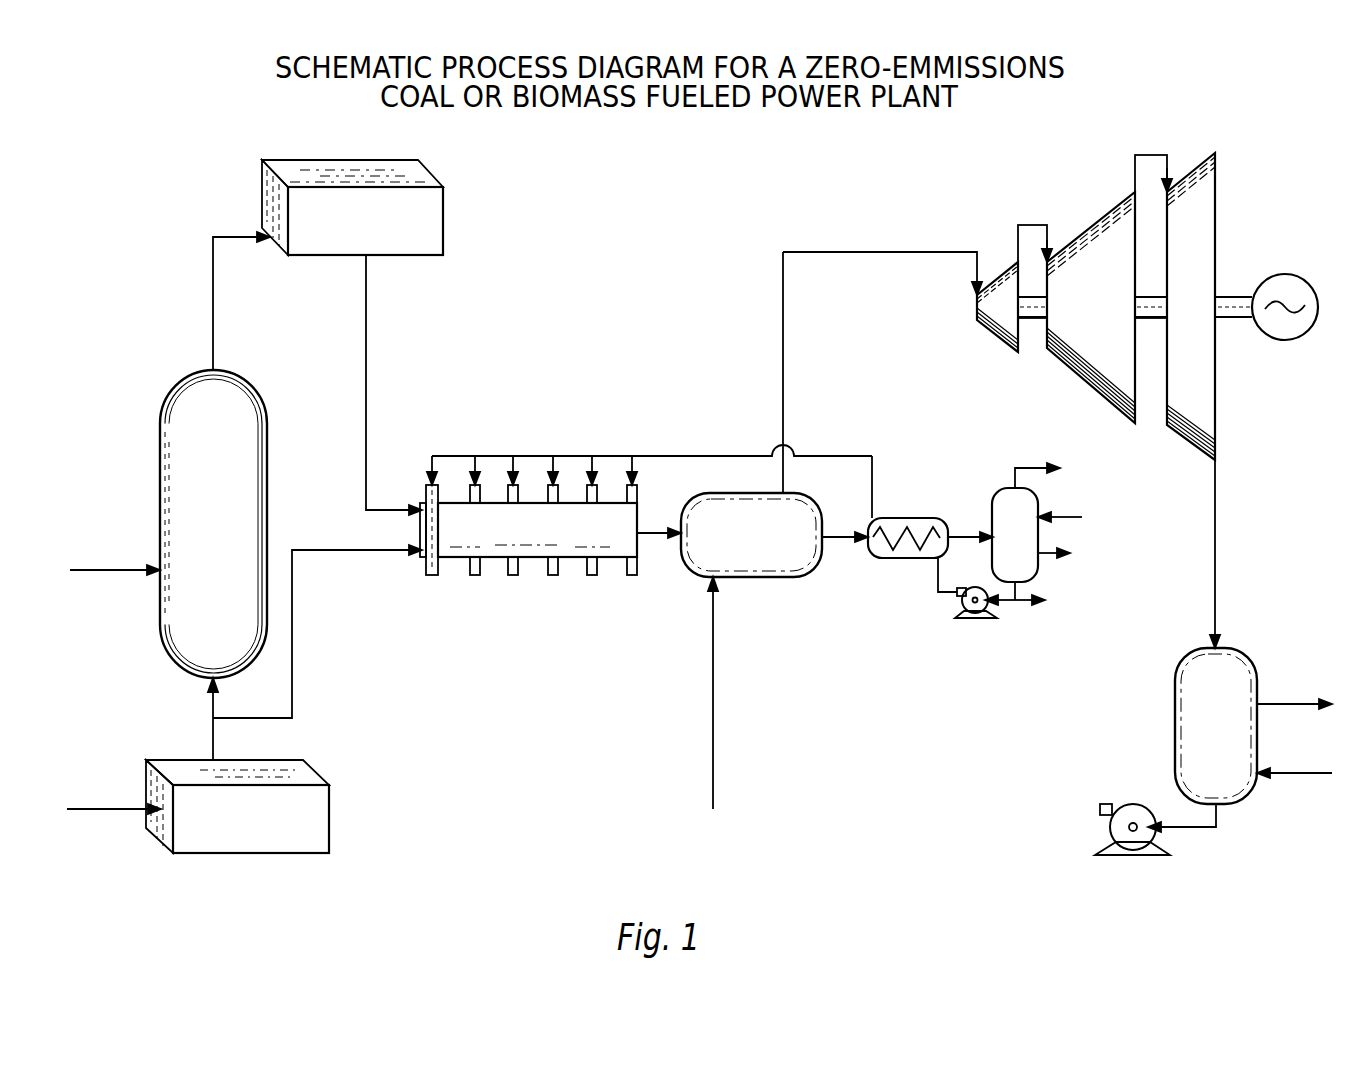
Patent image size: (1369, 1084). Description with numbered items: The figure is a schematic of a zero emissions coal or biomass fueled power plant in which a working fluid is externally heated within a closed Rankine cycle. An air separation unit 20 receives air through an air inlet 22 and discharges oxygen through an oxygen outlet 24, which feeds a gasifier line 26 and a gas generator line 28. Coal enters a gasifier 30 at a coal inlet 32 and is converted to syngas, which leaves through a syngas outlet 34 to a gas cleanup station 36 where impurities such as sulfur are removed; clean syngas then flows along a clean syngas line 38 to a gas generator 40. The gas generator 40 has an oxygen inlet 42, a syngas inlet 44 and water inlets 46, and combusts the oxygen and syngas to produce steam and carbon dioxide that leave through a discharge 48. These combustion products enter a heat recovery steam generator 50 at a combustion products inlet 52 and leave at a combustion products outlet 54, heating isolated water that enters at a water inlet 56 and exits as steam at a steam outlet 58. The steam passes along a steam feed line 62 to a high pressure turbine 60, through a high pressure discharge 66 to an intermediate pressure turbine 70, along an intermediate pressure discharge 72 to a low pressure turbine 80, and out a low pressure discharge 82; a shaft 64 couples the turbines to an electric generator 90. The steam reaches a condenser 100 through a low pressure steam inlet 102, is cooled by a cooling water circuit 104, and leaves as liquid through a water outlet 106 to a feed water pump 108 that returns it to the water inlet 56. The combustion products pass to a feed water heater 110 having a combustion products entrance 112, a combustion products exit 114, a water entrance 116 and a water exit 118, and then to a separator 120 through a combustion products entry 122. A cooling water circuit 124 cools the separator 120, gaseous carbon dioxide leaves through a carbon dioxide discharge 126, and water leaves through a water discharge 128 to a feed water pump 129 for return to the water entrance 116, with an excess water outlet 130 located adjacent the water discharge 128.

The air separation unit 20 is at (329, 787).
The air inlet 22 is at (120, 811).
The oxygen outlet 24 is at (213, 750).
The gasifier line 26 is at (213, 710).
The gas generator line 28 is at (292, 664).
The gasifier 30 is at (267, 448).
The coal inlet 32 is at (116, 572).
The syngas outlet 34 is at (213, 352).
The gas cleanup station 36 is at (328, 256).
The clean syngas line 38 is at (366, 325).
The gas generator 40 is at (520, 598).
The oxygen inlet 42 is at (416, 557).
The syngas inlet 44 is at (423, 503).
The water inlets 46 is at (433, 482).
The discharge 48 is at (642, 523).
The heat recovery steam generator 50 is at (778, 579).
The combustion products inlet 52 is at (677, 540).
The combustion products outlet 54 is at (832, 540).
The water inlet 56 is at (722, 580).
The steam outlet 58 is at (783, 493).
The high pressure turbine 60 is at (994, 337).
The steam feed line 62 is at (900, 251).
The shaft 64 is at (1033, 322).
The high pressure discharge 66 is at (1033, 225).
The intermediate pressure turbine 70 is at (1091, 393).
The intermediate pressure discharge 72 is at (1133, 172).
The low pressure turbine 80 is at (1189, 443).
The low pressure discharge 82 is at (1217, 545).
The electric generator 90 is at (1285, 342).
The condenser 100 is at (1175, 715).
The low pressure steam inlet 102 is at (1223, 648).
The cooling water circuit 104 is at (1283, 703).
The water outlet 106 is at (1222, 806).
The feed water pump 108 is at (1106, 823).
The feed water heater 110 is at (908, 560).
The combustion products entrance 112 is at (866, 532).
The combustion products exit 114 is at (960, 534).
The water entrance 116 is at (921, 582).
The water exit 118 is at (877, 490).
The separator 120 is at (993, 488).
The combustion products entry 122 is at (987, 535).
The cooling water circuit 124 is at (1078, 554).
The carbon dioxide discharge 126 is at (1027, 470).
The water discharge 128 is at (1020, 589).
The feed water pump 129 is at (983, 620).
The excess water outlet 130 is at (1030, 610).